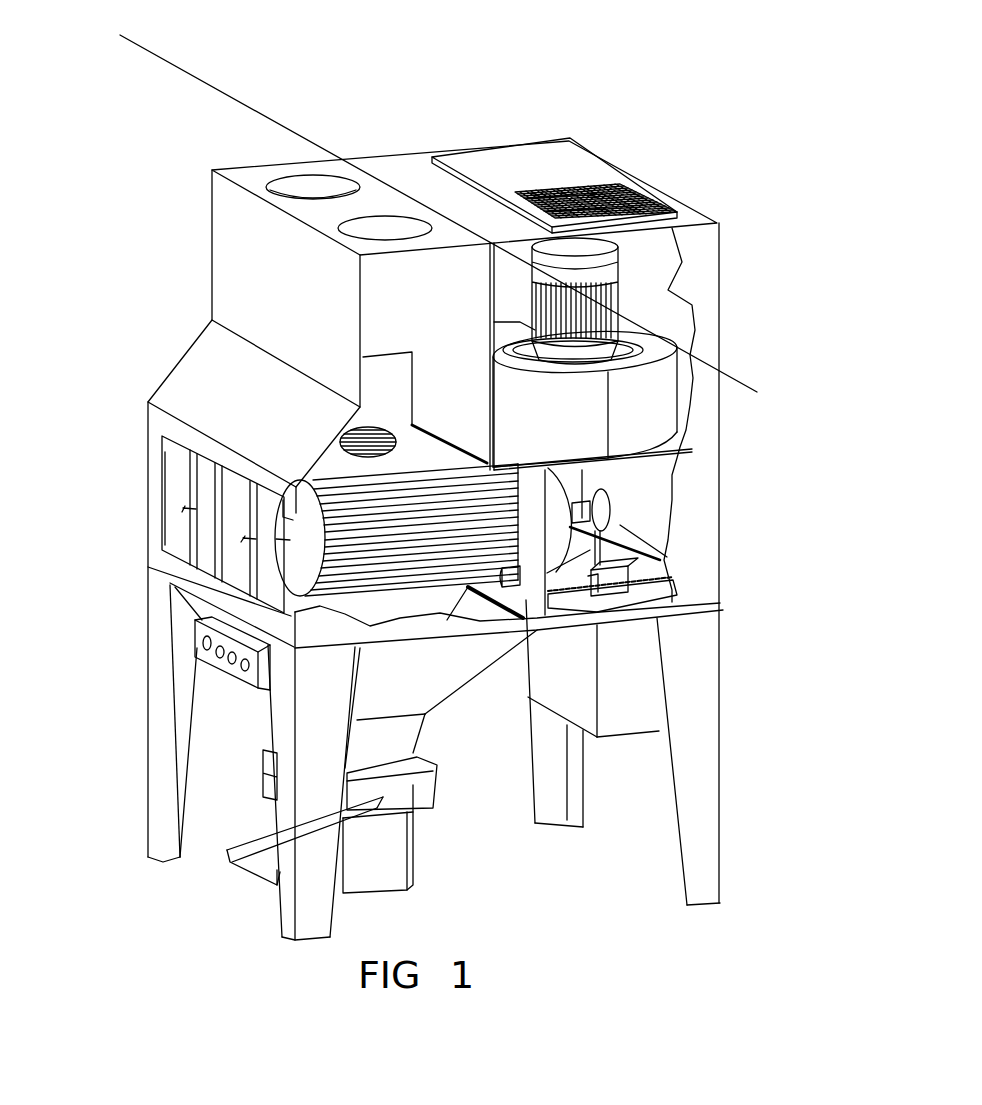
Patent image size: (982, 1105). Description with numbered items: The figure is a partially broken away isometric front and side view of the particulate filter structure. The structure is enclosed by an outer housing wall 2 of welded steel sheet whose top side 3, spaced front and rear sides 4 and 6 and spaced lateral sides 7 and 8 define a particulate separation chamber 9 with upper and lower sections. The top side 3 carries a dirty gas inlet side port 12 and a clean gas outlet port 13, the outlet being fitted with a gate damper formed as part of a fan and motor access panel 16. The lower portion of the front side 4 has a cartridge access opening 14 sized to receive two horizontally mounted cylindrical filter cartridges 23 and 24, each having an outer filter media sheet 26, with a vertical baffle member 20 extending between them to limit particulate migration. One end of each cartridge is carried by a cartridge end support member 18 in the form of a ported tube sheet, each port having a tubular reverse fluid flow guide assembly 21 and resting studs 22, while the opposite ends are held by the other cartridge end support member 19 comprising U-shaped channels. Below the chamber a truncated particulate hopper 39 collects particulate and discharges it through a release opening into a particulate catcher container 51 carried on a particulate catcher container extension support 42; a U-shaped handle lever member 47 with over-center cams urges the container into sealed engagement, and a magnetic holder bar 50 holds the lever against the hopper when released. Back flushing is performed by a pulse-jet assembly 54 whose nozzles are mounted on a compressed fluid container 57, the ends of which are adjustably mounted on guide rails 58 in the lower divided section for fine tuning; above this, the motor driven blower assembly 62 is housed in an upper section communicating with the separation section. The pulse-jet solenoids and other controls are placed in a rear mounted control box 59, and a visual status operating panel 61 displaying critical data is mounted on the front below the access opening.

The outer housing wall 2 is at (465, 482).
The top side 3 is at (117, 46).
The front side 4 is at (222, 399).
The rear side 6 is at (720, 455).
The lateral side 7 is at (705, 552).
The lateral side 8 is at (508, 143).
The particulate separation chamber 9 is at (385, 330).
The dirty gas inlet side port 12 is at (307, 193).
The clean gas outlet port 13 is at (640, 195).
The cartridge access opening 14 is at (173, 527).
The fan and motor access panel 16 is at (568, 170).
The cartridge end support member 18 is at (523, 597).
The cartridge end support member 19 is at (190, 486).
The vertical baffle member 20 is at (413, 447).
The tubular reverse fluid flow guide assembly 21 is at (557, 502).
The cartridge support stud 22 is at (505, 582).
The filter cartridge 23 is at (333, 508).
The filter cartridge 24 is at (360, 442).
The outer filter media sheet 26 is at (380, 587).
The particulate hopper 39 is at (408, 706).
The particulate catcher container extension support 42 is at (415, 787).
The U-shaped handle lever member 47 is at (258, 826).
The magnetic holder bar 50 is at (250, 870).
The particulate catcher container 51 is at (386, 876).
The pulse-jet assembly 54 is at (678, 514).
The compressed fluid container 57 is at (618, 580).
The guide rails 58 is at (675, 590).
The control box 59 is at (645, 706).
The visual status operating panel 61 is at (245, 672).
The motor driven blower assembly 62 is at (662, 301).